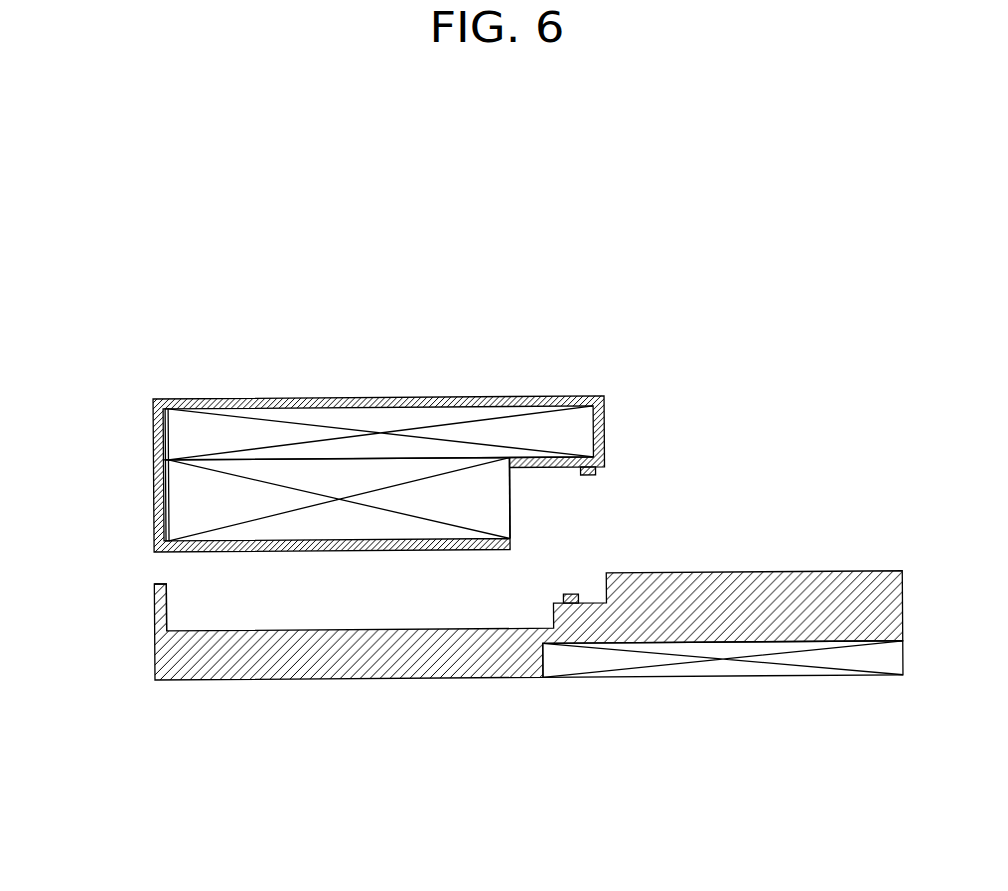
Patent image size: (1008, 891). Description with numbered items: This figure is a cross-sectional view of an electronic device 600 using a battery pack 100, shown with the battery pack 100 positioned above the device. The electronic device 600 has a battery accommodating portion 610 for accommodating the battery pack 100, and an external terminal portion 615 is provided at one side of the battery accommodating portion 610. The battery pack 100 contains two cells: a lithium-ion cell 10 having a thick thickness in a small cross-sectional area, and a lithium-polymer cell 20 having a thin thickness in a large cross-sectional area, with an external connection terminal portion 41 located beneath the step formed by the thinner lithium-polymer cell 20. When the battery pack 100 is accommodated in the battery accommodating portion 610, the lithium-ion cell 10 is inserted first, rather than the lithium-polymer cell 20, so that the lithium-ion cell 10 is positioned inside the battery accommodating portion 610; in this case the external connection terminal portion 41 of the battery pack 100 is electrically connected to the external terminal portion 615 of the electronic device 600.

The battery pack 100 is at (140, 514).
The lithium-ion cell 10 is at (183, 488).
The lithium-polymer cell 20 is at (200, 422).
The external connection terminal portion 41 is at (597, 471).
The electronic device 600 is at (200, 672).
The battery accommodating portion 610 is at (212, 614).
The external terminal portion 615 is at (566, 595).